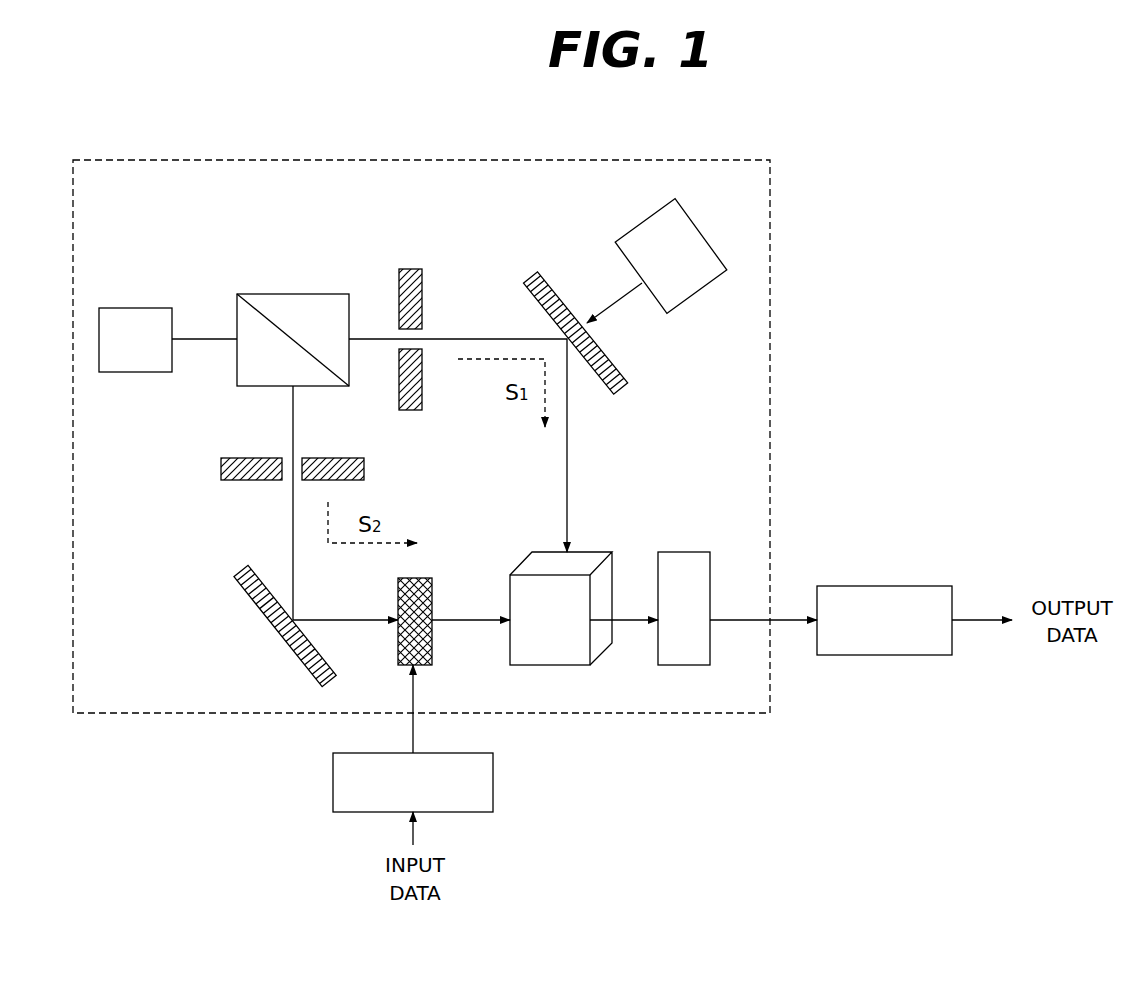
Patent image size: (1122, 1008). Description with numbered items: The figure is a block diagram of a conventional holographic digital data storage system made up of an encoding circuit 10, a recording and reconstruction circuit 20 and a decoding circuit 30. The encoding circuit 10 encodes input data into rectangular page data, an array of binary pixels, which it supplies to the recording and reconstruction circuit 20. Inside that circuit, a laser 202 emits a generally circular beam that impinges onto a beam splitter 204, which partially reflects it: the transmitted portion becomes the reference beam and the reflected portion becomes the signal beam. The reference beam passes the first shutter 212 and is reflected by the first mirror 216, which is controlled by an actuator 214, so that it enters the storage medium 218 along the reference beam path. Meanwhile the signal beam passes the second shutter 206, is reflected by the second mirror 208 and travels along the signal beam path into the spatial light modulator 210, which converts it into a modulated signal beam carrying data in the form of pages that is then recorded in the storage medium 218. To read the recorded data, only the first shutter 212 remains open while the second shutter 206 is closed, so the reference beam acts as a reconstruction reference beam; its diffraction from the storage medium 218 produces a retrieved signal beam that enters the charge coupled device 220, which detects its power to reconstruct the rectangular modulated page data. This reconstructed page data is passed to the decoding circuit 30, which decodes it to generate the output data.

The encoding circuit 10 is at (493, 783).
The recording and reconstruction circuit 20 is at (770, 302).
The decoding circuit 30 is at (905, 586).
The laser 202 is at (156, 308).
The beam splitter 204 is at (333, 294).
The second shutter 206 is at (364, 462).
The second mirror 208 is at (248, 566).
The spatial light modulator 210 is at (425, 578).
The first shutter 212 is at (411, 269).
The actuator 214 is at (655, 212).
The first mirror 216 is at (530, 278).
The storage medium 218 is at (598, 552).
The charge coupled device 220 is at (700, 552).